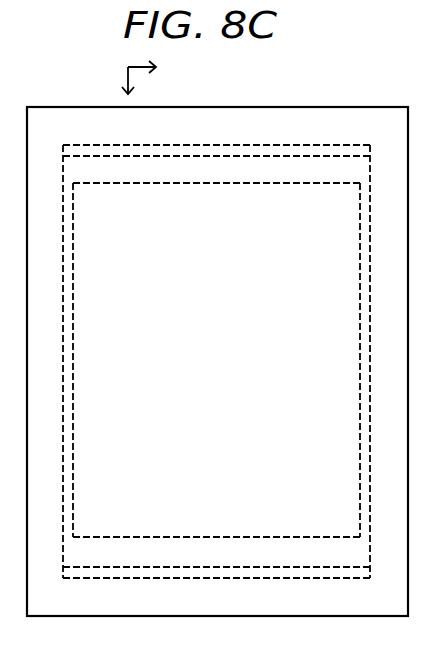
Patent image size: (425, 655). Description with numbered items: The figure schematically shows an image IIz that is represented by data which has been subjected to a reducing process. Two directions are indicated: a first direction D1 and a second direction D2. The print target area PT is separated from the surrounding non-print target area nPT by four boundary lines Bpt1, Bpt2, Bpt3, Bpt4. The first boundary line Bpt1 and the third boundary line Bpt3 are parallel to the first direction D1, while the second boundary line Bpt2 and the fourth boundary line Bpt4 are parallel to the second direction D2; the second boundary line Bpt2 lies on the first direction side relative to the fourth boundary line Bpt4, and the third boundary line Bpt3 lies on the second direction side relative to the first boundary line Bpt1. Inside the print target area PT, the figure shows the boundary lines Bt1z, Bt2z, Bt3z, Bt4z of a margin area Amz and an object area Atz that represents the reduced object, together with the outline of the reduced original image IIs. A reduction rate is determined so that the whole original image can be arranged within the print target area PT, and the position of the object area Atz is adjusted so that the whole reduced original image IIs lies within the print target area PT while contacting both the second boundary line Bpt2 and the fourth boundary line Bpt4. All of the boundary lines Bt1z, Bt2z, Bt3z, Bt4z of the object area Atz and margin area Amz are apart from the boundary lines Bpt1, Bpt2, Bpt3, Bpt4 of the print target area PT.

The image IIz is at (345, 107).
The non-print target area nPT is at (232, 110).
The print target area PT is at (332, 149).
The reduced original image IIs is at (127, 154).
The margin area Amz is at (140, 170).
The object area Atz is at (268, 197).
The first boundary line Bpt1 is at (232, 146).
The second boundary line Bpt2 is at (370, 372).
The third boundary line Bpt3 is at (228, 578).
The fourth boundary line Bpt4 is at (63, 372).
The boundary line of object area and margin area Bt1z is at (207, 185).
The boundary line of object area and margin area Bt2z is at (358, 388).
The boundary line of object area and margin area Bt3z is at (208, 538).
The boundary line of object area and margin area Bt4z is at (75, 386).
The first direction D1 is at (156, 68).
The second direction D2 is at (105, 81).